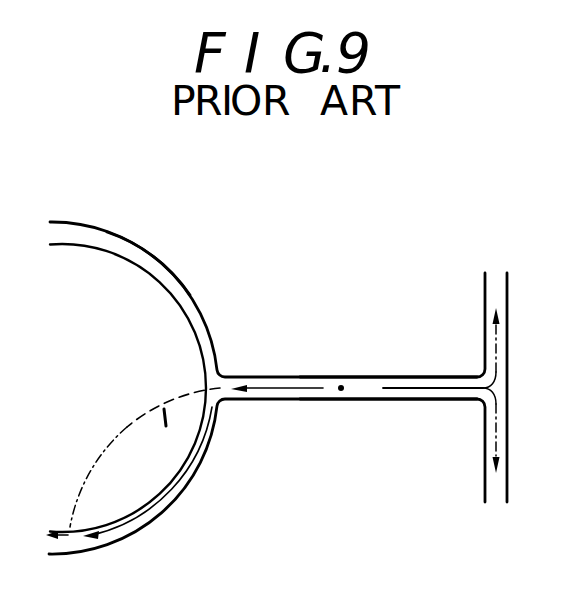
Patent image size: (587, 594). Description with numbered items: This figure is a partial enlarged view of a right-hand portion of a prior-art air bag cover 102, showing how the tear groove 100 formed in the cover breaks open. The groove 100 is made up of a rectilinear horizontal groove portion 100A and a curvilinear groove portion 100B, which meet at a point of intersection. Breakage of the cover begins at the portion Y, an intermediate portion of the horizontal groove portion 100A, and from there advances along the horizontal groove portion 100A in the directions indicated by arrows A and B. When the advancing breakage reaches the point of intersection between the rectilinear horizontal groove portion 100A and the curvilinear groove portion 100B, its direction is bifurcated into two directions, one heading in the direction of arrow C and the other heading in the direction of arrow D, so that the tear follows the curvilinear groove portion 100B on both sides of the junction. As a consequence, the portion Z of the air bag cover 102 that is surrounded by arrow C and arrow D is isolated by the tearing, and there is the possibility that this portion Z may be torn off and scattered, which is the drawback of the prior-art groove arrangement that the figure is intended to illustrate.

The groove 100 is at (107, 233).
The horizontal groove portion 100A is at (423, 401).
The curvilinear groove portion 100B is at (158, 263).
The air bag cover 102 is at (79, 271).
The arrow A is at (283, 386).
The arrow B is at (422, 385).
The arrow C is at (195, 460).
The arrow D is at (115, 440).
The portion Y is at (341, 387).
The portion Z is at (164, 409).